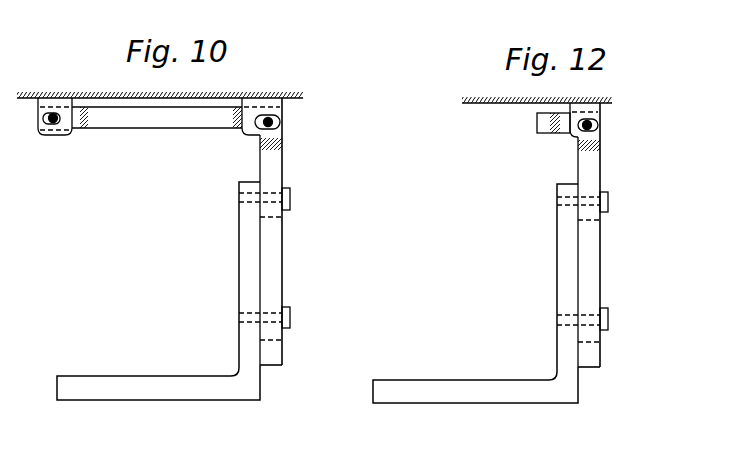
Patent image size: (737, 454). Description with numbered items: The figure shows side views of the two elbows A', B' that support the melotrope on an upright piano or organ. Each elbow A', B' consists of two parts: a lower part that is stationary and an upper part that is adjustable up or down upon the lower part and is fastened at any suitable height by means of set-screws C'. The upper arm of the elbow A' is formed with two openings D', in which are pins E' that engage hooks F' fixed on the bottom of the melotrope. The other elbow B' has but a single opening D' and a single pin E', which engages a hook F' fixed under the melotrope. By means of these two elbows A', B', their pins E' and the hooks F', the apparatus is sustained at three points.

In FIG. 10, the elbow A' is at (158, 291).
In FIG. 12, the elbow B' is at (480, 293).
In FIG. 10, the set-screws C' is at (277, 264).
In FIG. 12, the set-screws C' is at (591, 268).
In FIG. 10, the openings D' is at (194, 132).
In FIG. 12, the openings D' is at (553, 136).
In FIG. 10, the pins E' is at (148, 135).
In FIG. 10, the hooks F' is at (174, 152).
In FIG. 12, the hooks F' is at (609, 139).